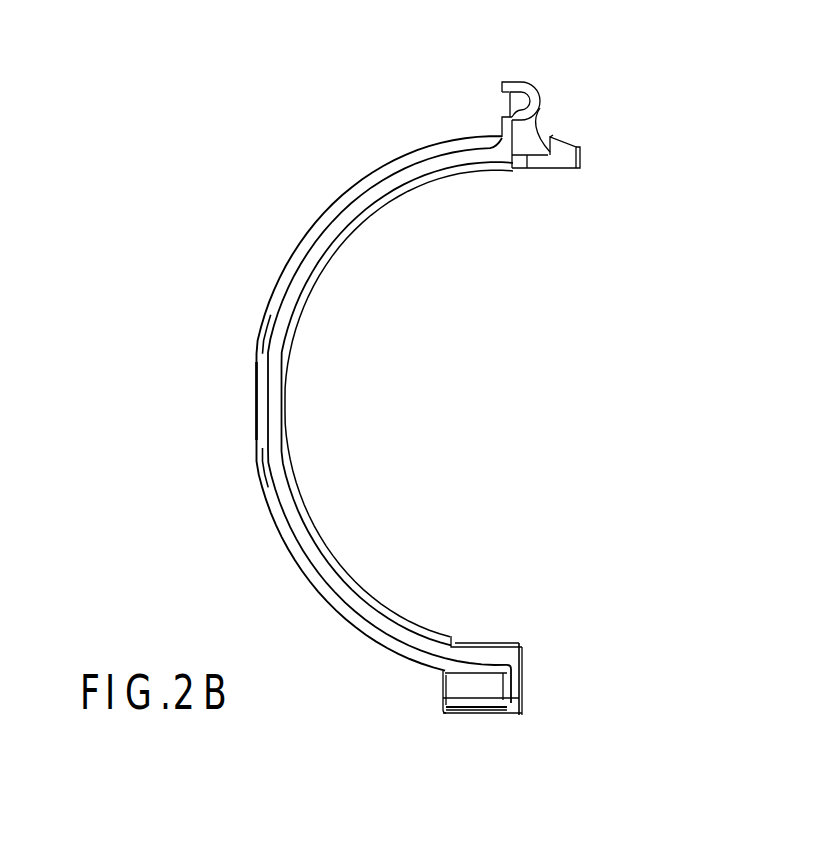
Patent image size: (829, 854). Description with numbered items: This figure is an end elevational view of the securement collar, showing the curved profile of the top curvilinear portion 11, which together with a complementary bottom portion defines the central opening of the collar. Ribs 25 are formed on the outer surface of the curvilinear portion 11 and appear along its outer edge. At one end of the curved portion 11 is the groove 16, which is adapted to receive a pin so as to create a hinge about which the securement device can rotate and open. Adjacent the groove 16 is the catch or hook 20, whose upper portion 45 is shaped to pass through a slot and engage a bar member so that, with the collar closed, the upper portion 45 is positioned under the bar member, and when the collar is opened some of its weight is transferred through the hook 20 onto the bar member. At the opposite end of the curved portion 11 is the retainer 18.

The top curvilinear portion 11 is at (365, 177).
The ribs 25 is at (295, 248).
The groove 16 is at (523, 80).
The upper portion of hook 45 is at (540, 132).
The catch or hook 20 is at (560, 162).
The retainer 18 is at (462, 708).